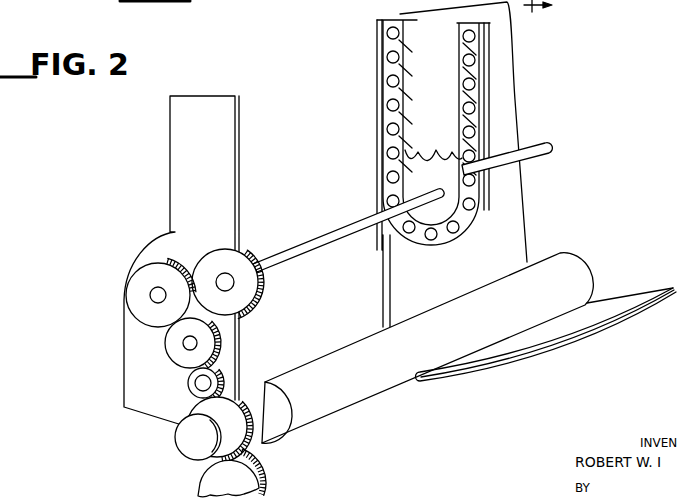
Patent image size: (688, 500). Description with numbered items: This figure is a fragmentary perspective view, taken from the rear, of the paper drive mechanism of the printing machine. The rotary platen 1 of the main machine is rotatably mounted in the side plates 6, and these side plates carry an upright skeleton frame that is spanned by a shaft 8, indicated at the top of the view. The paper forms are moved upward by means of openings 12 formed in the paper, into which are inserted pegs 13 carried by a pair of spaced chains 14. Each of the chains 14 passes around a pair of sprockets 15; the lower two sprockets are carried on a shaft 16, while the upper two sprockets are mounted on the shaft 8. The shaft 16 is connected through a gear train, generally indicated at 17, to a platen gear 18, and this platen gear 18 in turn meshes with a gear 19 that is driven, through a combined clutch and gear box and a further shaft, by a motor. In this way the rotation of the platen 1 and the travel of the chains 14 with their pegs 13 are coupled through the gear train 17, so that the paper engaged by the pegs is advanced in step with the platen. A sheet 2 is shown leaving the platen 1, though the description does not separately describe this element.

The rotary platen 1 is at (568, 258).
The sheet 2 is at (645, 298).
The side plates 6 is at (180, 183).
The shaft 8 is at (545, 7).
The openings 12 is at (378, 126).
The pegs 13 is at (384, 122).
The chains 14 is at (490, 95).
The sprockets 15 is at (437, 160).
The shaft 16 is at (330, 233).
The gear train 17 is at (148, 345).
The platen gear 18 is at (200, 406).
The gear 19 is at (202, 484).